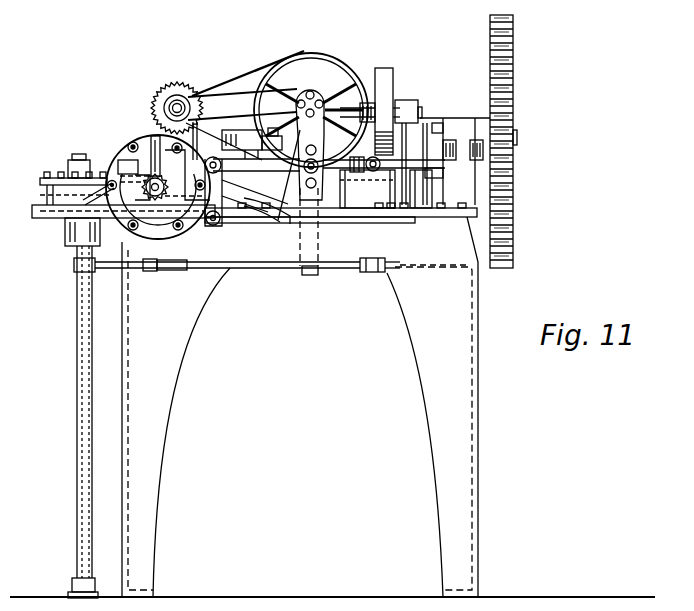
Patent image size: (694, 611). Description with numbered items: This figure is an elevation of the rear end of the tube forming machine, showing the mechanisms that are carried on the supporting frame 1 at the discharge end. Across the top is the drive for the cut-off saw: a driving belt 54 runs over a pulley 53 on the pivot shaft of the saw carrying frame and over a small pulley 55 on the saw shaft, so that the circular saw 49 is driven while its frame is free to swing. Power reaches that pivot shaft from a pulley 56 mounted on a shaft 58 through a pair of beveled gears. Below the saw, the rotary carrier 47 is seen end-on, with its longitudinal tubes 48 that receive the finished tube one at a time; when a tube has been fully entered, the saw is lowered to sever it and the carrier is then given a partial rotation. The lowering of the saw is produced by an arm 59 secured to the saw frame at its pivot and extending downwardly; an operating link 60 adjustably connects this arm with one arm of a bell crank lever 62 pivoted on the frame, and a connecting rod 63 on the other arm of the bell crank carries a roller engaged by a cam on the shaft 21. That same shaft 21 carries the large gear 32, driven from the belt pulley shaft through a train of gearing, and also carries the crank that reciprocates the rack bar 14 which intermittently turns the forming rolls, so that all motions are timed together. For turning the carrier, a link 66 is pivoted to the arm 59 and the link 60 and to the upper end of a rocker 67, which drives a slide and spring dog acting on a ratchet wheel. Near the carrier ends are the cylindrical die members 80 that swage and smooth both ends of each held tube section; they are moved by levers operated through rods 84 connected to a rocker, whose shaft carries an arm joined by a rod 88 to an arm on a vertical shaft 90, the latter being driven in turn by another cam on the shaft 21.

The supporting frame 1 is at (400, 258).
The rack bar 14 is at (250, 200).
The shaft 21 is at (446, 135).
The large gear 32 is at (510, 75).
The rotary carrier 47 is at (113, 180).
The longitudinal tubes 48 is at (130, 145).
The circular saw 49 is at (168, 82).
The pulley 53 is at (312, 54).
The driving belt 54 is at (225, 78).
The small pulley 55 is at (178, 95).
The pulley 56 is at (385, 68).
The shaft 58 is at (402, 110).
The arm 59 is at (314, 130).
The operating link 60 is at (350, 173).
The bell crank lever 62 is at (421, 172).
The connecting rod 63 is at (440, 179).
The link 66 is at (296, 140).
The rocker 67 is at (217, 192).
The cylindrical die members 80 is at (108, 182).
The rods 84 is at (54, 178).
The rod 88 is at (260, 270).
The vertical shaft 90 is at (306, 275).